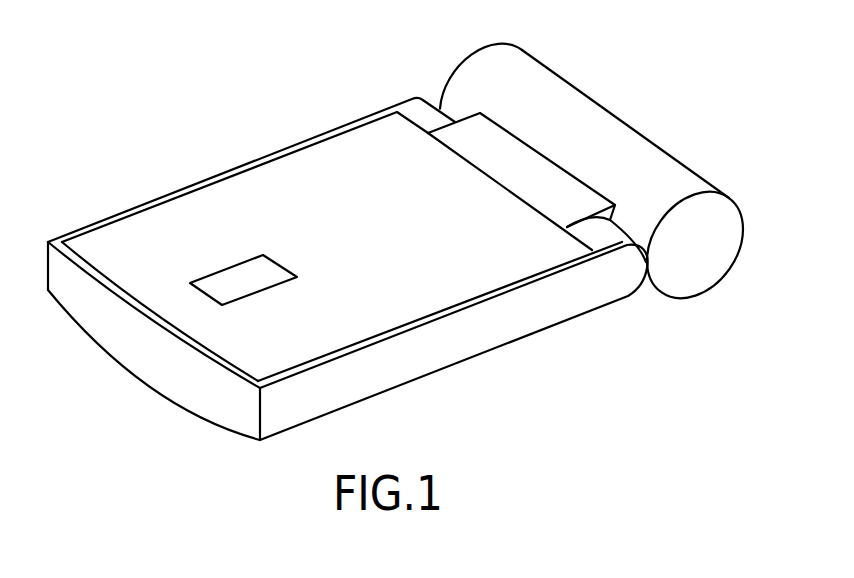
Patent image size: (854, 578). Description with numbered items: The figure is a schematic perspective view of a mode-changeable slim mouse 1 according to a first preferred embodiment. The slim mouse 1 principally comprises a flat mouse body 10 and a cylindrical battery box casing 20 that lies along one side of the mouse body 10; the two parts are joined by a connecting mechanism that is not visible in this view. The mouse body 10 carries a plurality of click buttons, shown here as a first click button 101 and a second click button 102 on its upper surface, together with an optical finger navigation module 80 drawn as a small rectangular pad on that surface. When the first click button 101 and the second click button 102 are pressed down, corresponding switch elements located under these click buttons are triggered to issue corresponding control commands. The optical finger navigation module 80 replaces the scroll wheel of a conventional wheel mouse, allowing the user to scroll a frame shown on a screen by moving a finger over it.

The slim mouse 1 is at (225, 40).
The mouse body 10 is at (342, 146).
The battery box casing 20 is at (598, 125).
The optical finger navigation module 80 is at (242, 277).
The first click button 101 is at (125, 233).
The second click button 102 is at (337, 333).